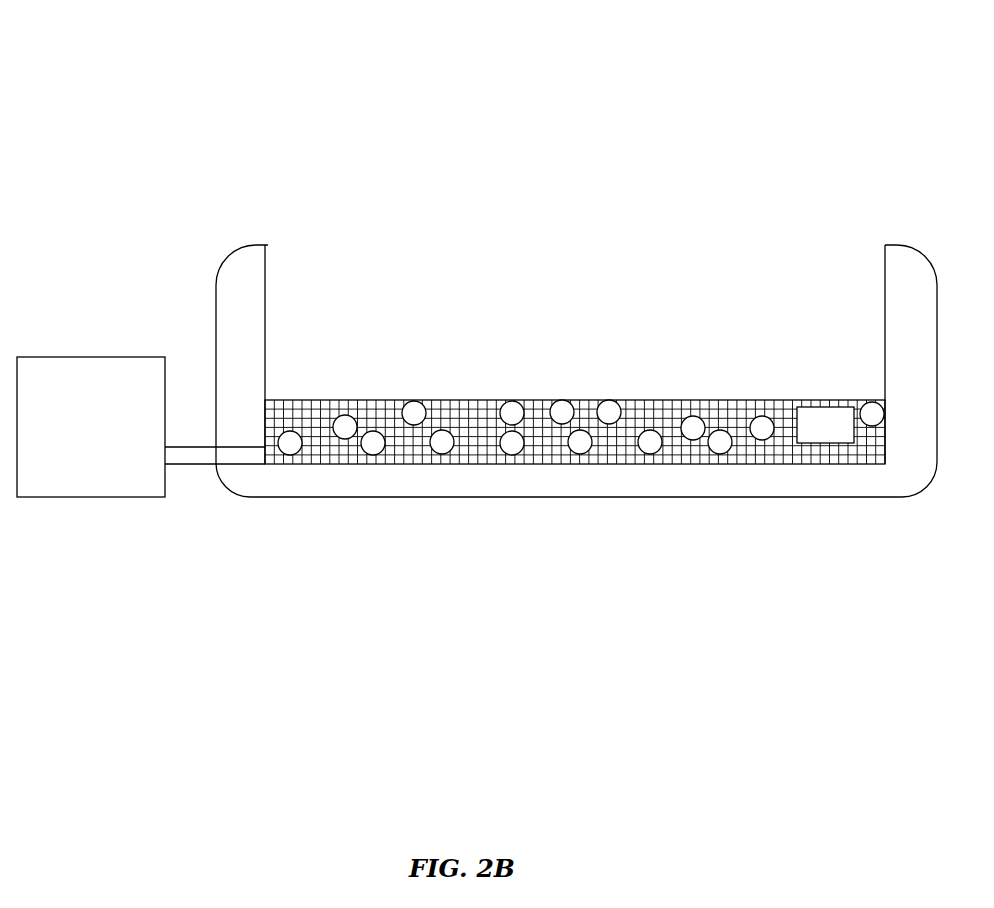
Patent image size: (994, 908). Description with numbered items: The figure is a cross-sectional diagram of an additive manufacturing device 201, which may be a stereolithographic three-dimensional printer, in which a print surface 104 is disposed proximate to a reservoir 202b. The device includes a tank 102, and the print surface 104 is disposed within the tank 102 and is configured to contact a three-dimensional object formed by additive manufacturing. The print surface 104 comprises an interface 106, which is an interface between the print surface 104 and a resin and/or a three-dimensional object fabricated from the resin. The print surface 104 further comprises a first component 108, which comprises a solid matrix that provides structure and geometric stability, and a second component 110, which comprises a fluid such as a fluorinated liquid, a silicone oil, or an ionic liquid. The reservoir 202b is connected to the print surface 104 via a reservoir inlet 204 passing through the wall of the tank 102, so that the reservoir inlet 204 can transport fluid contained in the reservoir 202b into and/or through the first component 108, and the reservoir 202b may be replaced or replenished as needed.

The additive manufacturing device 201 is at (188, 124).
The tank 102 is at (576, 371).
The print surface 104 is at (825, 425).
The interface 106 is at (325, 400).
The first component 108 is at (661, 412).
The second component 110 is at (415, 415).
The reservoir 202b is at (91, 427).
The reservoir inlet 204 is at (187, 466).